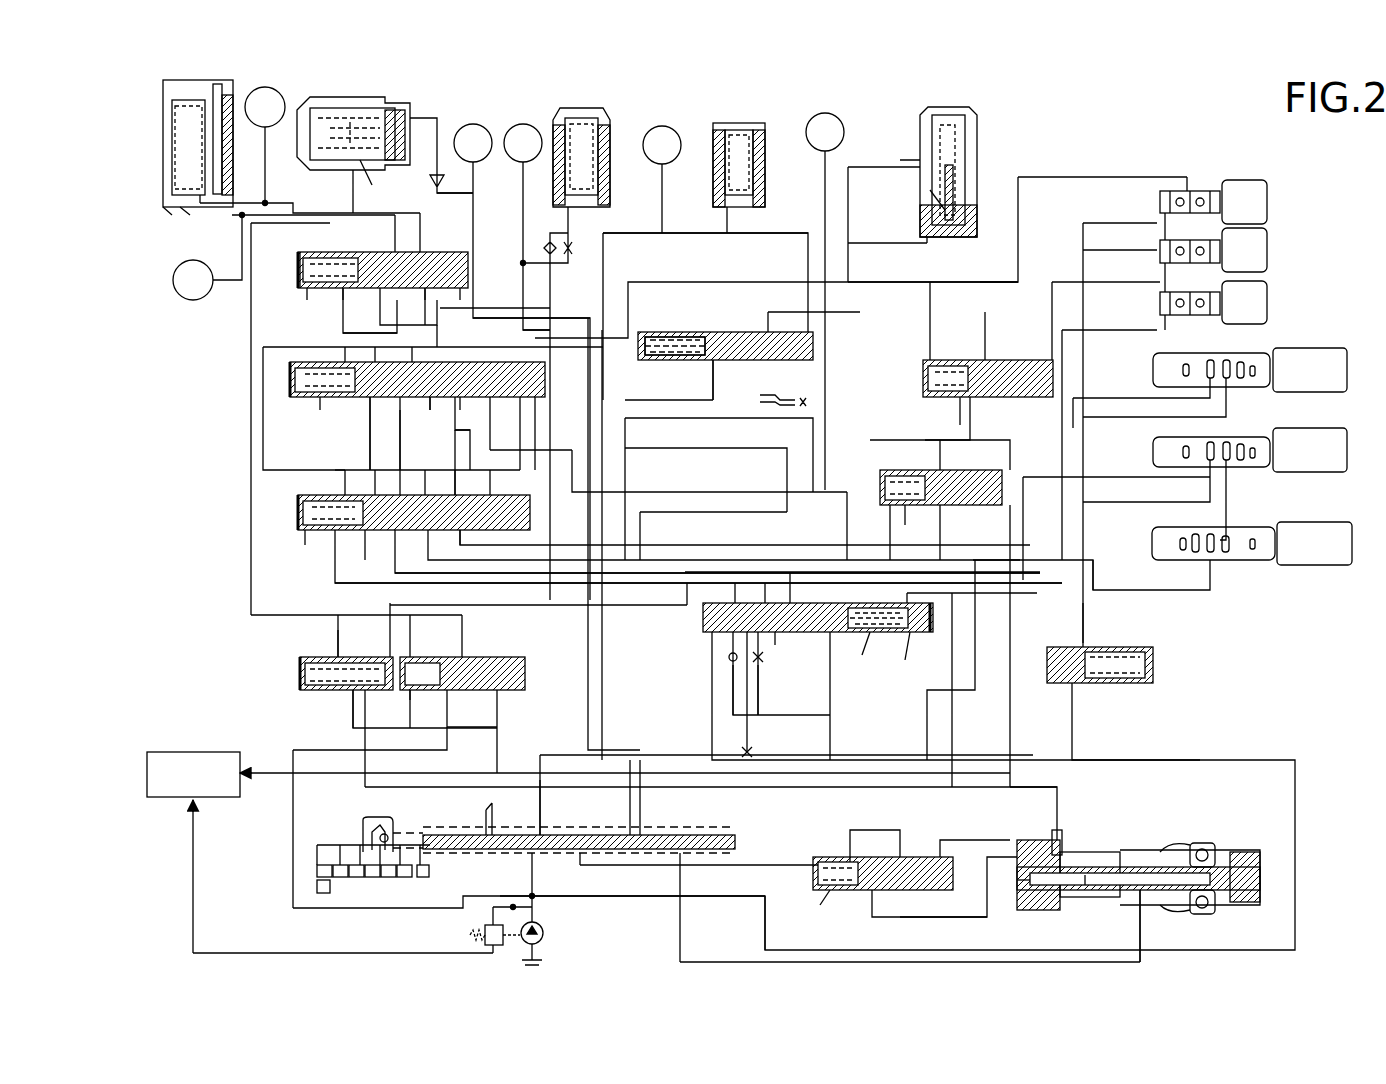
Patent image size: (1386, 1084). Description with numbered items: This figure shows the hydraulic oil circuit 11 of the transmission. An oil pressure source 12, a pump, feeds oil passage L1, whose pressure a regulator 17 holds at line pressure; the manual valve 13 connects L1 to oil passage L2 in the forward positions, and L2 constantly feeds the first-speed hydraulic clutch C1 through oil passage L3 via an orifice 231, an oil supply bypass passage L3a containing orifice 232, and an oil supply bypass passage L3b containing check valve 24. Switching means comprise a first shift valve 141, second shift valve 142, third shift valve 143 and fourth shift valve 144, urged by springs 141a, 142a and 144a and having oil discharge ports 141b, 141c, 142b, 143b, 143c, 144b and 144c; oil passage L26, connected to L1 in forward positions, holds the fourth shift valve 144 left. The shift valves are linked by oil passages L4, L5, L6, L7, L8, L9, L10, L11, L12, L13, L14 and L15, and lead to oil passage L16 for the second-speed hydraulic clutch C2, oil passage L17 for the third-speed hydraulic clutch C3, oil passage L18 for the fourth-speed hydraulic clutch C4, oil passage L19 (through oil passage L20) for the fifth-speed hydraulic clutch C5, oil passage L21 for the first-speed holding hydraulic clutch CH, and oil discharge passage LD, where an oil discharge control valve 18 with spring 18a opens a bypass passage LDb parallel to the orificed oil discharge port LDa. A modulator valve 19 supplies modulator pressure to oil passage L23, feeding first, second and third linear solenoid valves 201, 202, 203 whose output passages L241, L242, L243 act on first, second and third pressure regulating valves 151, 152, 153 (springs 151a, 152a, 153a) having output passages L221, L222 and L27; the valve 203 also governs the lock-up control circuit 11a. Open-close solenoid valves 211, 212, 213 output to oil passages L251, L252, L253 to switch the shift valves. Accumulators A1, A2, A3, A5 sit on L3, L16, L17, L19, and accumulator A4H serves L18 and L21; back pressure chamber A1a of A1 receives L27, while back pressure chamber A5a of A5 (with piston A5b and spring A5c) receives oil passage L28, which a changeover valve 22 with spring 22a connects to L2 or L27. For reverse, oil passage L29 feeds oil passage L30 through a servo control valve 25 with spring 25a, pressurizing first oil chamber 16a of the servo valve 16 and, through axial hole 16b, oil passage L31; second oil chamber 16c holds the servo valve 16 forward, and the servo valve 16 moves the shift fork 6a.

The accumulator for 4th-speed and 1st-speed holding A4H is at (160, 140).
The 1st-speed holding hydraulic clutch CH is at (265, 146).
The 1st-speed accumulator A1 is at (385, 92).
The back pressure chamber of 1st-speed accumulator A1a is at (386, 182).
The 1st-speed hydraulic clutch C1 is at (522, 362).
The 2nd-speed hydraulic clutch C2 is at (527, 227).
The 3rd-speed hydraulic clutch C3 is at (662, 179).
The 4th-speed hydraulic clutch C4 is at (209, 257).
The 5th-speed hydraulic clutch C5 is at (825, 301).
The 2nd-speed accumulator A2 is at (603, 100).
The 3rd-speed accumulator A3 is at (740, 110).
The 5th-speed accumulator A5 is at (970, 105).
The back pressure chamber of 5th-speed accumulator A5a is at (930, 193).
The accumulator piston A5b is at (960, 200).
The accumulator spring A5c is at (955, 140).
The third solenoid valve 213 is at (1278, 205).
The first solenoid valve 211 is at (1278, 255).
The second solenoid valve 212 is at (1278, 305).
The oil passage L253 is at (1135, 180).
The oil passage L251 is at (1083, 270).
The oil passage L252 is at (1130, 310).
The oil passage L28 is at (850, 268).
The third linear solenoid valve 203 is at (1240, 390).
The first linear solenoid valve 201 is at (1240, 472).
The second linear solenoid valve 202 is at (1225, 568).
The oil passage L243 is at (1105, 398).
The oil passage L241 is at (1105, 477).
The oil passage L242 is at (1110, 590).
The oil passage L23 is at (1085, 605).
The oil discharge control valve 18 is at (688, 330).
The spring 18a is at (648, 332).
The oil passage L17 is at (610, 270).
The oil discharge passage LD is at (640, 400).
The oil discharge port LDa is at (755, 400).
The bypass passage LDb is at (713, 385).
The first pressure regulating valve 151 is at (925, 362).
The spring 151a is at (960, 395).
The second pressure regulating valve 152 is at (893, 468).
The spring 152a is at (900, 510).
The third pressure regulating valve 153 is at (490, 650).
The spring 153a is at (420, 709).
The oil passage L221 is at (945, 312).
The oil passage L222 is at (850, 553).
The fourth shift valve 144 is at (297, 270).
The spring 144a is at (318, 250).
The oil discharge port 144b is at (425, 290).
The oil discharge port 144c is at (345, 292).
The third shift valve 143 is at (285, 375).
The oil discharge port 143b is at (372, 400).
The oil discharge port 143c is at (430, 400).
The second shift valve 142 is at (297, 510).
The spring 142a is at (310, 532).
The oil discharge port 142b is at (462, 532).
The first shift valve 141 is at (700, 618).
The spring 141a is at (922, 659).
The oil discharge port 141b is at (870, 659).
The oil discharge port 141c is at (776, 640).
The oil passage L18 is at (395, 228).
The oil passage L21 is at (455, 215).
The oil passage L3 is at (500, 250).
The oil supply bypass passage L3a is at (760, 695).
The oil supply bypass passage L3b is at (728, 657).
The oil passage L26 is at (495, 305).
The oil passage L16 is at (528, 298).
The oil passage L15 is at (340, 333).
The oil passage L14 is at (437, 347).
The oil passage L13 is at (263, 392).
The oil passage L12 is at (335, 493).
The oil passage L11 is at (365, 450).
The oil passage L10 is at (430, 460).
The oil passage L9 is at (470, 462).
The oil passage L8 is at (493, 470).
The oil passage L7 is at (680, 450).
The oil passage L6 is at (695, 420).
The oil passage L5 is at (705, 572).
The oil passage L4 is at (735, 583).
The oil passage L19 is at (790, 515).
The oil passage L20 is at (625, 640).
The oil passage L27 is at (251, 590).
The hydraulic circuit 11 is at (235, 478).
The hydraulic oil control circuit for the lock-up clutch 11a is at (212, 789).
The changeover valve 22 is at (295, 672).
The spring 22a is at (330, 660).
The orifice 232 is at (762, 660).
The orifice 231 is at (755, 750).
The check valve 24 is at (731, 665).
The modulator valve 19 is at (1105, 700).
The manual valve 13 is at (480, 870).
The oil passage L2 is at (535, 812).
The oil passage L1 is at (535, 885).
The oil pressure source 12 is at (545, 932).
The regulator 17 is at (478, 930).
The oil passage L29 is at (750, 865).
The oil passage L30 is at (905, 918).
The oil passage L31 is at (725, 950).
The servo control valve 25 is at (945, 850).
The spring 25a is at (807, 912).
The servo valve 16 is at (1105, 845).
The first oil chamber 16a is at (1020, 890).
The axial hole 16b is at (1085, 888).
The second oil chamber 16c is at (1062, 845).
The shift fork 6a is at (1235, 850).